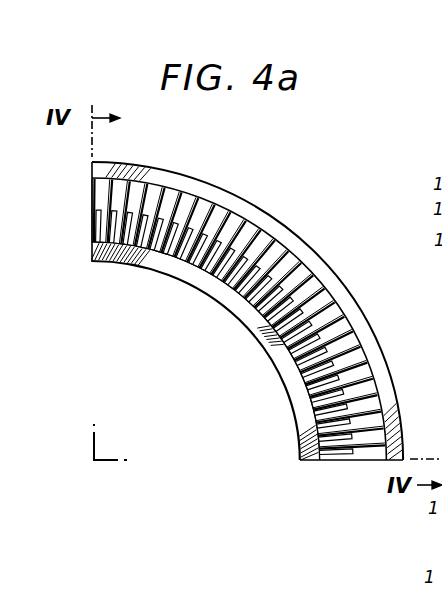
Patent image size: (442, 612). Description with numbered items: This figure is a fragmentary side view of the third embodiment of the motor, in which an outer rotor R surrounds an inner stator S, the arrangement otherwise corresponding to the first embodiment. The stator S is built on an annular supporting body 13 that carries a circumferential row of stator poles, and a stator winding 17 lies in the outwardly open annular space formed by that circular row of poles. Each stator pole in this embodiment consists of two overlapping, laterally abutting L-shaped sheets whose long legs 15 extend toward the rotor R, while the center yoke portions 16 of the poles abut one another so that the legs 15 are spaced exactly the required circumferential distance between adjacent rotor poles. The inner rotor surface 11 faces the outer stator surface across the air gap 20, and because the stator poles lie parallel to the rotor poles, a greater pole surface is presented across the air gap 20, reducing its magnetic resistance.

The inner rotor surface 11 is at (238, 198).
The annular supporting body 13 is at (139, 266).
The long legs 15 is at (272, 256).
The center yoke portions 16 is at (252, 308).
The stator winding 17 is at (352, 310).
The air gap 20 is at (373, 365).
The outer rotor R is at (375, 332).
The inner stator S is at (297, 404).